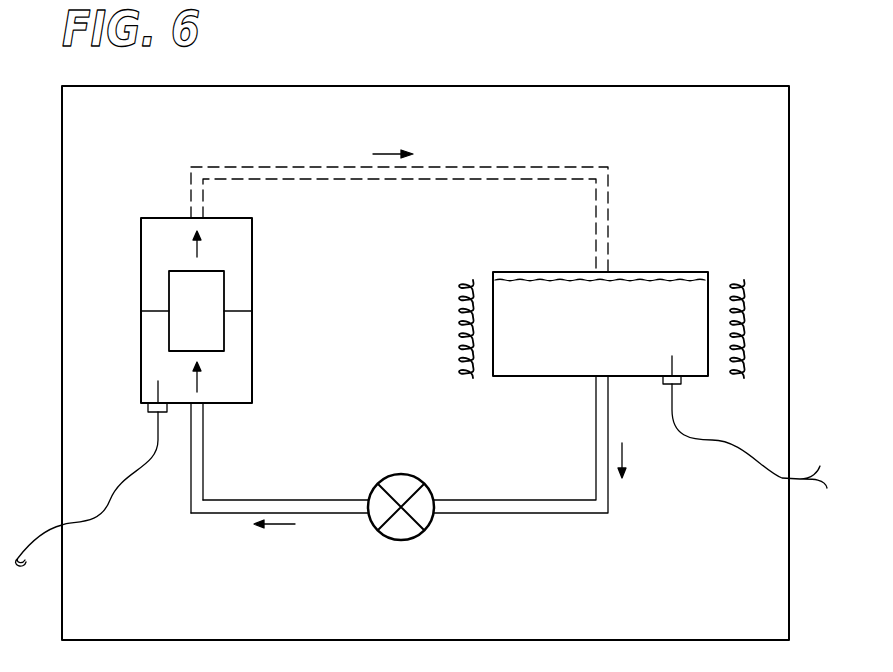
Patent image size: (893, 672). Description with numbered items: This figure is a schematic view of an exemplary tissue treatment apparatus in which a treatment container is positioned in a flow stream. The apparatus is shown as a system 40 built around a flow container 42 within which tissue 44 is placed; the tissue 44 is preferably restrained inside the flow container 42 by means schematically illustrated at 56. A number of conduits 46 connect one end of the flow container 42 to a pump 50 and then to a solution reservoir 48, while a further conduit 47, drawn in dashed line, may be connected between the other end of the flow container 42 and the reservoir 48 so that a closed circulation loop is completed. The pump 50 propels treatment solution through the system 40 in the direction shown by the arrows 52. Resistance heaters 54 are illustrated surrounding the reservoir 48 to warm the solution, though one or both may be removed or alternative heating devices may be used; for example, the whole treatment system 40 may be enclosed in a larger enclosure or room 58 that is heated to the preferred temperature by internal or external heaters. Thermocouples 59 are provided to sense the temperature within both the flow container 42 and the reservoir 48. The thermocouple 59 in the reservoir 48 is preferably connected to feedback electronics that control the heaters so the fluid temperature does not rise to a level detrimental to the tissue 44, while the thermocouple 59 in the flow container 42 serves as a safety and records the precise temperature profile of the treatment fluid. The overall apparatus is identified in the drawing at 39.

The cooling system 39 is at (661, 0).
The system 40 is at (622, 548).
The flow container 42 is at (158, 217).
The tissue 44 is at (169, 340).
The conduits 46 is at (525, 515).
The conduit 47 is at (490, 165).
The solution reservoir 48 is at (527, 378).
The pump 50 is at (389, 542).
The arrows 52 is at (197, 247).
The resistance heaters 54 is at (738, 285).
The restraining means 56 is at (157, 310).
The enclosure or room 58 is at (481, 86).
The thermocouples 59 is at (155, 391).